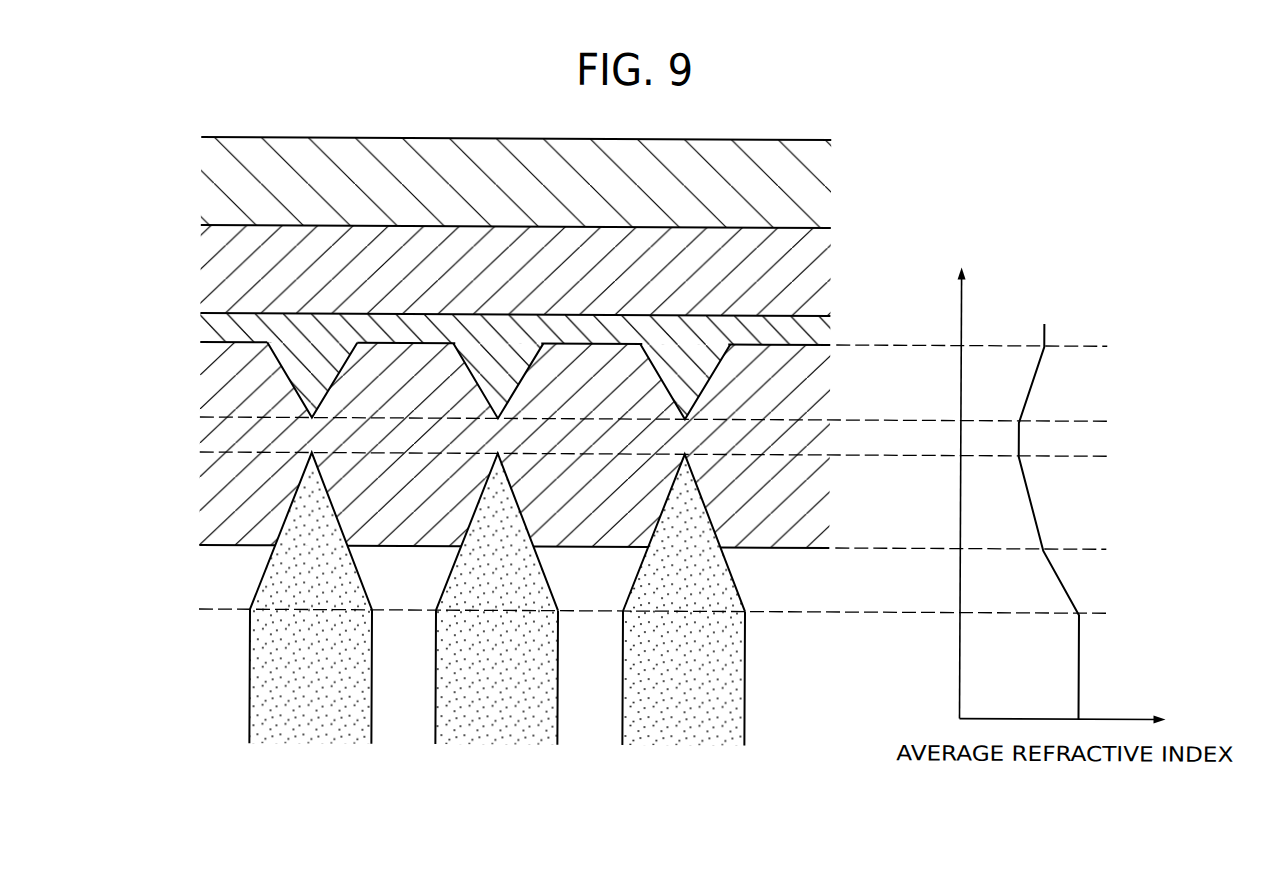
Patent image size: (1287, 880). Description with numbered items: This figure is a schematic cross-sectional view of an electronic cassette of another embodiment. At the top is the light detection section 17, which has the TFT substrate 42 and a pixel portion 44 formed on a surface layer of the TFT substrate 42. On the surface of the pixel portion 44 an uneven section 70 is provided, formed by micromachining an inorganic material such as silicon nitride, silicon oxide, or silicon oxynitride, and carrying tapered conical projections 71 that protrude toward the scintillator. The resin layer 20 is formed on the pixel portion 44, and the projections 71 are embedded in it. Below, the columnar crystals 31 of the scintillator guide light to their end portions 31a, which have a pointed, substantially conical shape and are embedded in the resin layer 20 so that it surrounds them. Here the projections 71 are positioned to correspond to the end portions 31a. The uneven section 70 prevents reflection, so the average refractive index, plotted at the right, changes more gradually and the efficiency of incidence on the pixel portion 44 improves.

The light detection section 17 is at (571, 226).
The TFT substrate 42 is at (800, 181).
The pixel portion 44 is at (544, 270).
The uneven section 70 is at (810, 327).
The projections 71 is at (690, 375).
The resin layer 20 is at (797, 497).
The columnar crystal 31 is at (532, 599).
The end portion 31a is at (715, 569).